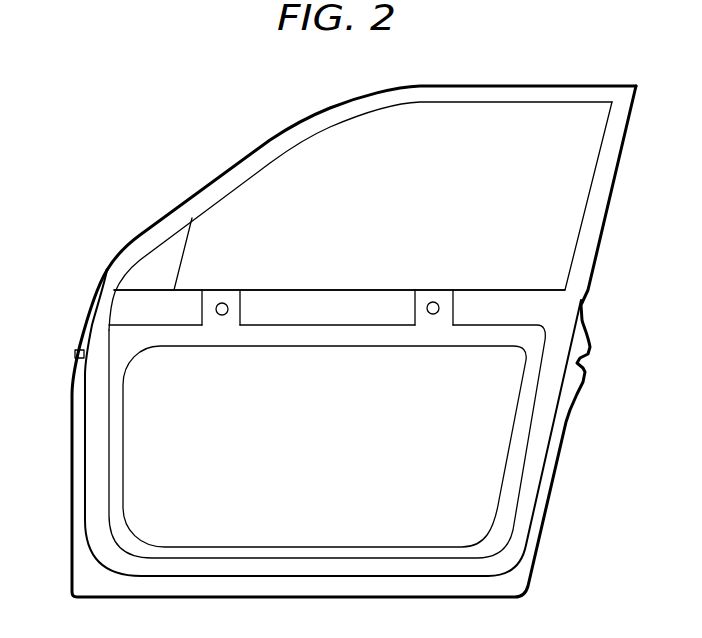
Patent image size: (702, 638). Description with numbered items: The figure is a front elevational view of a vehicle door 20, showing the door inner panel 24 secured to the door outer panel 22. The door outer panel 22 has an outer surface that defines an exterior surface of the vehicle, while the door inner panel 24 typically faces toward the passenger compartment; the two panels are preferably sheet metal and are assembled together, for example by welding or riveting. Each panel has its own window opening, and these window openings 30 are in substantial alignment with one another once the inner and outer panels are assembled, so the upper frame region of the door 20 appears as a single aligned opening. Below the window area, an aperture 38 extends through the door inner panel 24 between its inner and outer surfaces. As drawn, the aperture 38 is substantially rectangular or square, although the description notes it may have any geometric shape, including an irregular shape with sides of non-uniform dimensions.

The door 20 is at (201, 151).
The door outer panel 22 is at (90, 569).
The door inner panel 24 is at (100, 320).
The window opening 30 is at (508, 135).
The aperture 38 is at (327, 372).